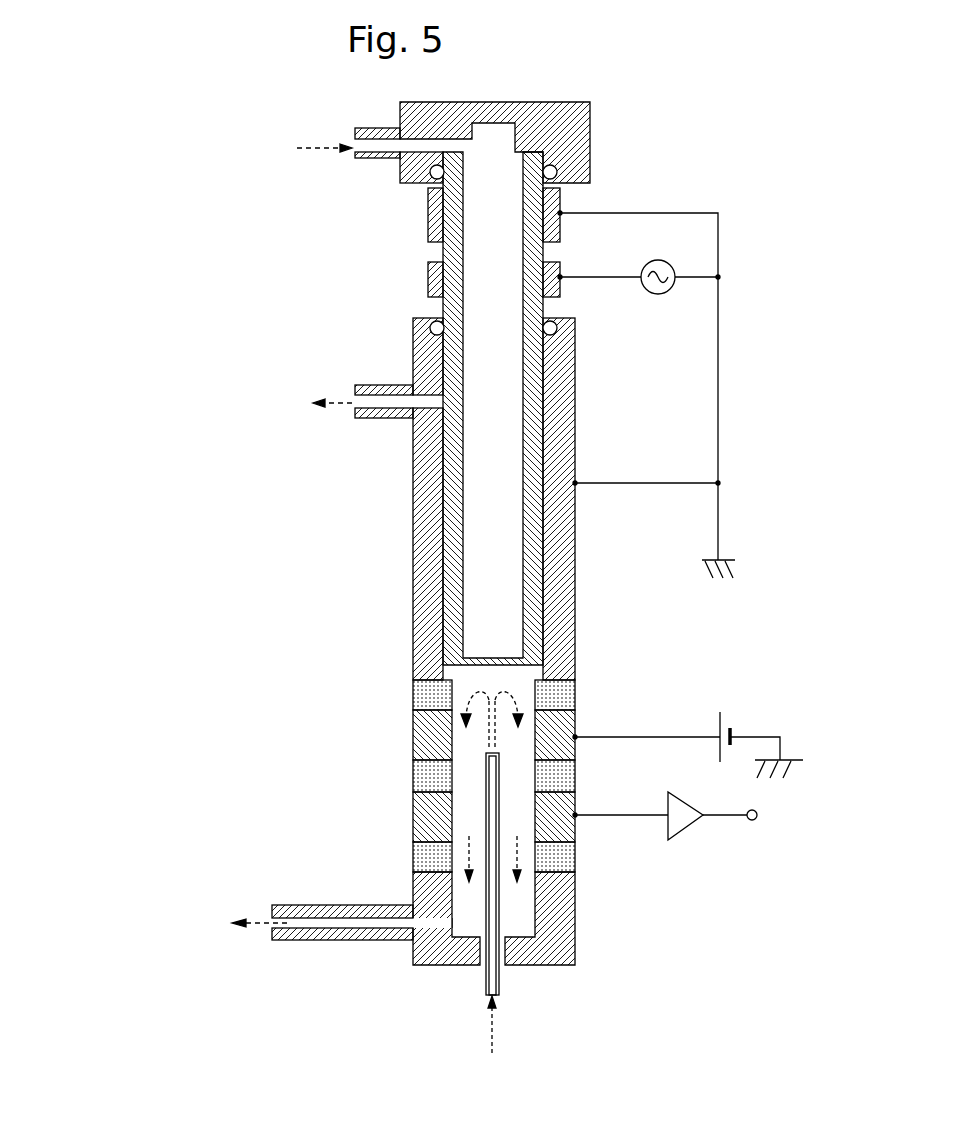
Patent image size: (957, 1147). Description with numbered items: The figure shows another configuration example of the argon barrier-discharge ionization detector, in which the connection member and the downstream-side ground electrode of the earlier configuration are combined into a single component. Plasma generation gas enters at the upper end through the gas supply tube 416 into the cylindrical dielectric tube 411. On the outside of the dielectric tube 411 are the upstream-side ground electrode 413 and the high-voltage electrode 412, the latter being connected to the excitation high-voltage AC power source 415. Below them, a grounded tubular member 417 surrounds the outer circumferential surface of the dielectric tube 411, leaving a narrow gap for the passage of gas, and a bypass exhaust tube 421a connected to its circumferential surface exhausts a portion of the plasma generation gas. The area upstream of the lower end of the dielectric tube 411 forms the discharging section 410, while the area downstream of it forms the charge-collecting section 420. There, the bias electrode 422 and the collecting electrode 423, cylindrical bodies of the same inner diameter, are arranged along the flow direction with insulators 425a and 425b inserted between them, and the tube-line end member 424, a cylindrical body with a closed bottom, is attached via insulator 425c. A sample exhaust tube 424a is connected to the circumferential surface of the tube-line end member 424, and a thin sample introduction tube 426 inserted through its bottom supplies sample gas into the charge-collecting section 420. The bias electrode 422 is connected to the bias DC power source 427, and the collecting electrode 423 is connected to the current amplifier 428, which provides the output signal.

The discharging section 410 is at (93, 82).
The cylindrical dielectric tube 411 is at (442, 307).
The high-voltage electrode 412 is at (428, 282).
The upstream-side ground electrode 413 is at (428, 222).
The excitation high-voltage AC power source 415 is at (660, 296).
The gas supply tube 416 is at (592, 128).
The tubular member 417 is at (576, 555).
The charge-collecting section 420 is at (93, 667).
The bypass exhaust tube 421a is at (375, 416).
The bias electrode 422 is at (576, 757).
The collecting electrode 423 is at (576, 834).
The tube-line end member 424 is at (576, 920).
The sample exhaust tube 424a is at (312, 904).
The insulator 425a is at (413, 694).
The insulator 425b is at (413, 775).
The insulator 425c is at (413, 856).
The sample introduction tube 426 is at (478, 938).
The bias DC power source 427 is at (722, 711).
The current amplifier 428 is at (686, 830).